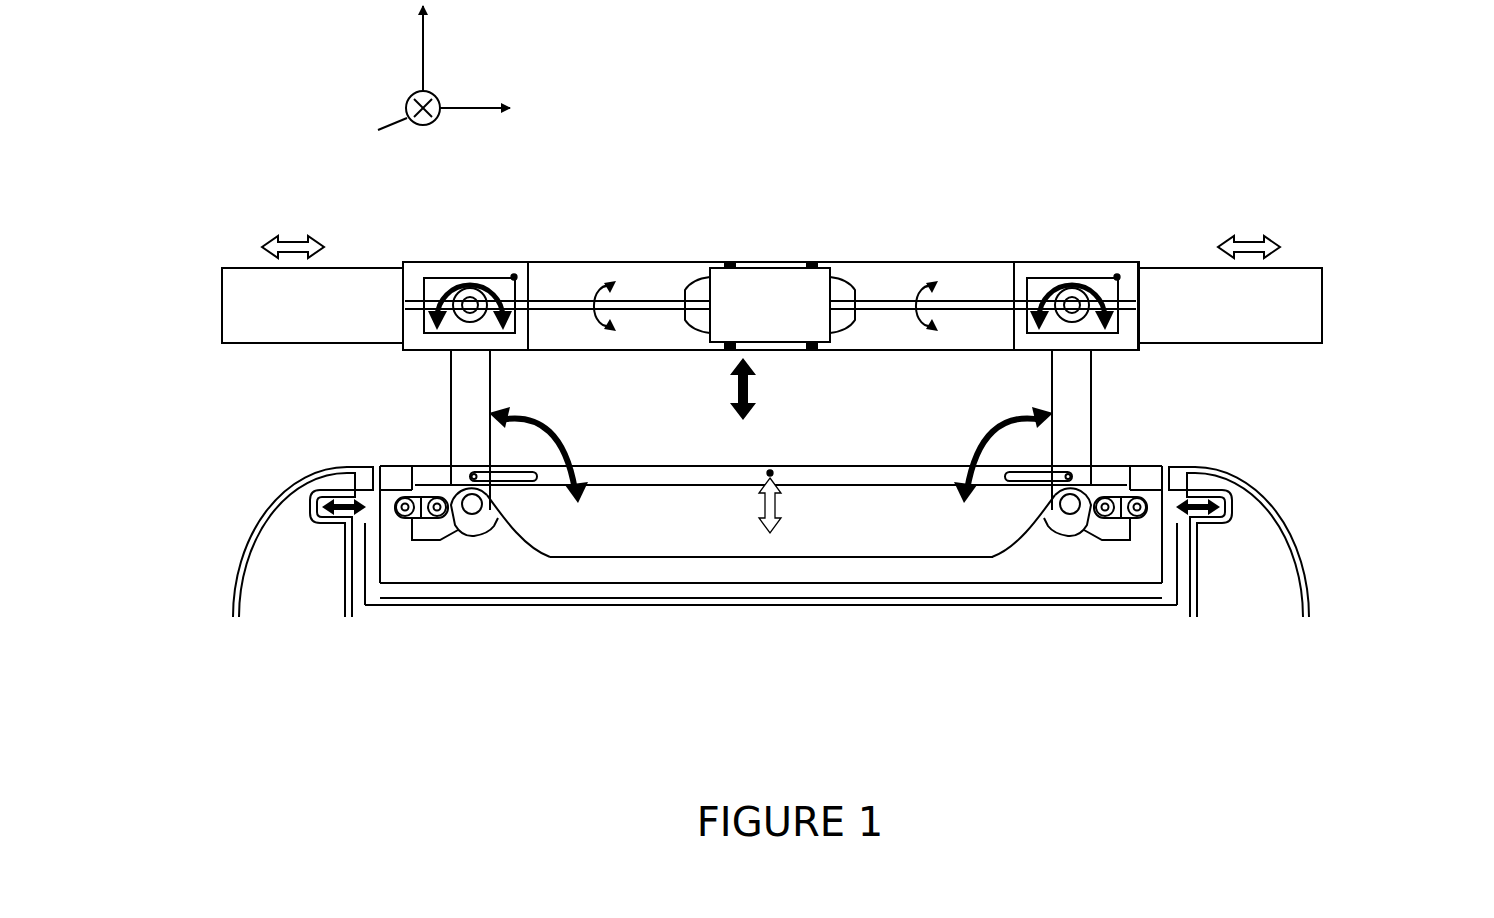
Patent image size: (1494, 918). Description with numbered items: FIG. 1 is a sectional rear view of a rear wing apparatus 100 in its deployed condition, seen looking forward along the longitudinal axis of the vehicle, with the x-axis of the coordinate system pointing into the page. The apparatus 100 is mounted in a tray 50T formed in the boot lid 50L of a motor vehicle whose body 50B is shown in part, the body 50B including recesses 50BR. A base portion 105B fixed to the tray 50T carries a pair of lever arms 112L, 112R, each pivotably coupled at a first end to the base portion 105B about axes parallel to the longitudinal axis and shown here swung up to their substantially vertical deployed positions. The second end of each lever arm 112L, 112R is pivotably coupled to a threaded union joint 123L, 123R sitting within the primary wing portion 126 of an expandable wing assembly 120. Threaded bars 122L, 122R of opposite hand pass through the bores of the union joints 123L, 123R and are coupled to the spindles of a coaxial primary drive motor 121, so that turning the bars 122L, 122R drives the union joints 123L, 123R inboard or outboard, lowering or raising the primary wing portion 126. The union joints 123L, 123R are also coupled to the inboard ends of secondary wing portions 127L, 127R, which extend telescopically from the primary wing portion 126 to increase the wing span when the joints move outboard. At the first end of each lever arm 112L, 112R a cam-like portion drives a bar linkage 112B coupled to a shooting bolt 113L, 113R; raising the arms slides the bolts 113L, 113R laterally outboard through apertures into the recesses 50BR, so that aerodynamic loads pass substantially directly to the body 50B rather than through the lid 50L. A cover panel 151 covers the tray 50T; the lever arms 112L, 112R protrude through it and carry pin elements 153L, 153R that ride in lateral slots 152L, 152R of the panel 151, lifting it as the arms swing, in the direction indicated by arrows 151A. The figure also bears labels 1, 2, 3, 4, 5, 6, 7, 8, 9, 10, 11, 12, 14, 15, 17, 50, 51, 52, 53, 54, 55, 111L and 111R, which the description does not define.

The rear wing apparatus 100 is at (1294, 178).
The expandable wing assembly 120 is at (1357, 308).
The primary drive motor 121 is at (792, 287).
The primary wing portion 126 is at (1000, 262).
The secondary wing portion 127L is at (240, 294).
The secondary wing portion 127R is at (1308, 292).
The left end of bar 2 is at (278, 347).
The right end of bar 3 is at (1264, 347).
The threaded union joint 123L is at (433, 283).
The threaded union joint 123R is at (1035, 283).
The left sensor 7 is at (514, 277).
The right sensor 8 is at (1117, 277).
The threaded bar 122L is at (642, 300).
The threaded bar 122R is at (958, 300).
The left shaft direction 5 is at (642, 353).
The right shaft direction 6 is at (897, 318).
The central motor 4 is at (770, 305).
The machine 1 is at (838, 258).
The vertical movement 52 is at (743, 355).
The lever arm 112L is at (462, 370).
The lever arm 112R is at (1080, 370).
The left post section 9 is at (451, 395).
The right post section 10 is at (1088, 395).
The pivoting movement 55 is at (771, 455).
The cover panel 151 is at (771, 575).
The platform top 11 is at (690, 466).
The arrows 151A is at (897, 513).
The height adjustment 53 is at (781, 524).
The platform body 17 is at (818, 572).
The base portion 105B is at (1033, 573).
The pin element 153L is at (470, 474).
The pin element 153R is at (1072, 474).
The lateral slot 152L is at (520, 478).
The lateral slot 152R is at (1018, 478).
The left link 111L is at (474, 508).
The right link 111R is at (1070, 508).
The pivot pins 15 is at (437, 516).
The bar linkage 112B is at (420, 522).
The shooting bolt 113L is at (392, 530).
The shooting bolt 113R is at (1218, 512).
The base 50 is at (288, 243).
The base frame 12 is at (768, 605).
The tray 50T is at (683, 607).
The boot lid 50L is at (628, 642).
The vehicle body 50B is at (235, 565).
The recesses 50BR is at (312, 507).
The lateral sliding movement 54 is at (320, 506).
The curved track 51 is at (228, 608).
The slide leg 14 is at (356, 540).